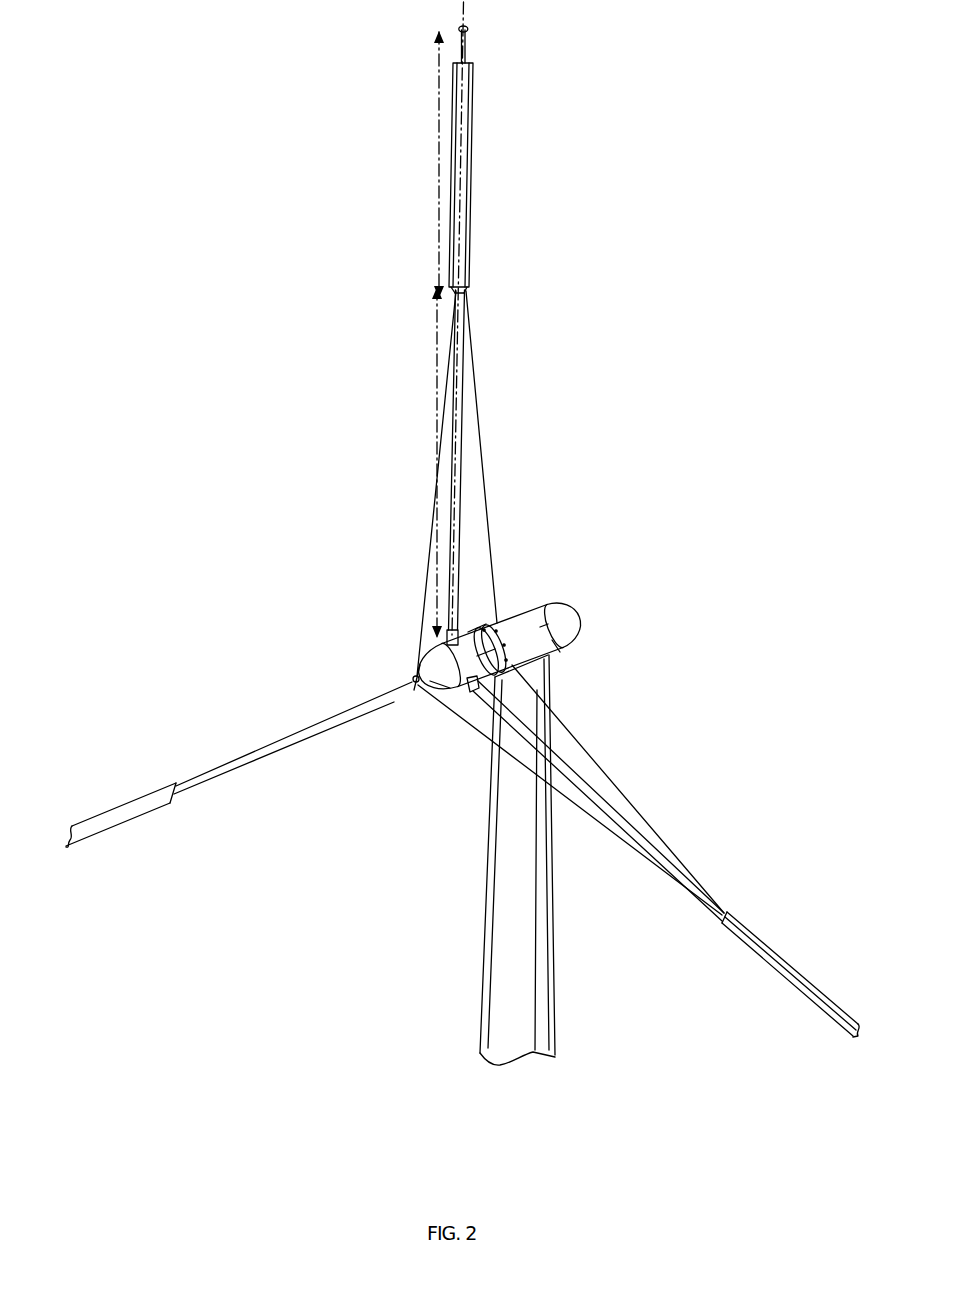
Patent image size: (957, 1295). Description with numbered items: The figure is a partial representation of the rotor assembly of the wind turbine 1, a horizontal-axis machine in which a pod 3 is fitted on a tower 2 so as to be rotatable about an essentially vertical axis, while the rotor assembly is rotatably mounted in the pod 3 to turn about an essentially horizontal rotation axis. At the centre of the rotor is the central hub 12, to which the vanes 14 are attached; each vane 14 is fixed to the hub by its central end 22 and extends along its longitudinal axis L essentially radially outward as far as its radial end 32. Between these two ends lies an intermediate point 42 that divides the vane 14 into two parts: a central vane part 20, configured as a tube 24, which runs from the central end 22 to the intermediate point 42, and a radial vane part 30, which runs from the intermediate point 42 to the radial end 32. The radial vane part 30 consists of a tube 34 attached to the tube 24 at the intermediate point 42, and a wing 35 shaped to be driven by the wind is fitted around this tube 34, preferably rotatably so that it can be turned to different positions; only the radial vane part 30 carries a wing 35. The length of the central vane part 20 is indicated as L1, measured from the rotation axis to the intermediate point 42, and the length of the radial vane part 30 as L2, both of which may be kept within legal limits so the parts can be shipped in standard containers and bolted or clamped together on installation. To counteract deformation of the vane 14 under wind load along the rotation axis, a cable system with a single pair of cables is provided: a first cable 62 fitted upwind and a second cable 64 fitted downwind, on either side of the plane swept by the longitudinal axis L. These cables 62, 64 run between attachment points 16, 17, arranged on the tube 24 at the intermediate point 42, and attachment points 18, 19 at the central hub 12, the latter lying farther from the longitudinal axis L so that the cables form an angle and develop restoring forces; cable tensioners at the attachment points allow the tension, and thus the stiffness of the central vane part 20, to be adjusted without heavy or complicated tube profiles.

The wind turbine 1 is at (690, 587).
The tower 2 is at (502, 946).
The pod 3 is at (542, 617).
The central hub 12 is at (432, 688).
The vane 14 is at (310, 362).
The attachment point 16 is at (458, 287).
The attachment point 17 is at (470, 287).
The attachment point 18 is at (497, 622).
The attachment point 19 is at (414, 685).
The central vane part 20 is at (355, 428).
The central end 22 is at (448, 633).
The tube 24 is at (452, 530).
The radial vane part 30 is at (338, 175).
The radial end 32 is at (474, 21).
The tube 34 is at (466, 45).
The wing 35 is at (453, 163).
The intermediate point 42 is at (472, 300).
The first cable 62 is at (488, 487).
The second cable 64 is at (430, 507).
The longitudinal axis L is at (462, 10).
The length of the central vane part L1 is at (438, 368).
The length of the radial vane part L2 is at (439, 107).